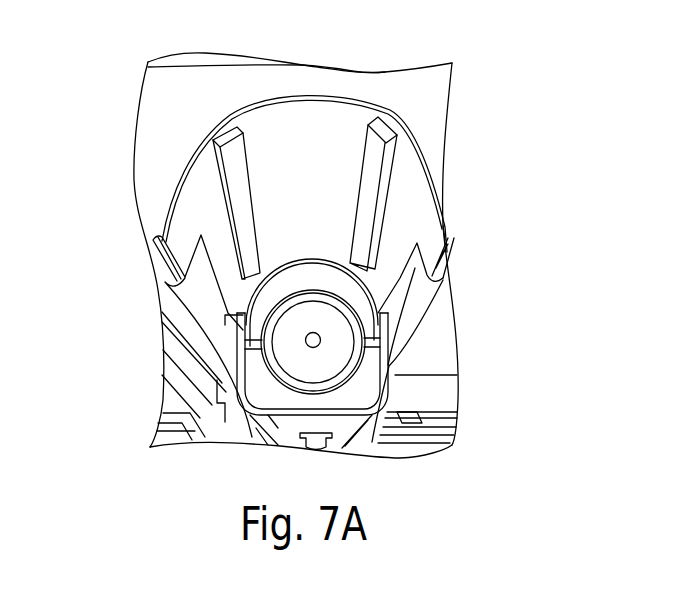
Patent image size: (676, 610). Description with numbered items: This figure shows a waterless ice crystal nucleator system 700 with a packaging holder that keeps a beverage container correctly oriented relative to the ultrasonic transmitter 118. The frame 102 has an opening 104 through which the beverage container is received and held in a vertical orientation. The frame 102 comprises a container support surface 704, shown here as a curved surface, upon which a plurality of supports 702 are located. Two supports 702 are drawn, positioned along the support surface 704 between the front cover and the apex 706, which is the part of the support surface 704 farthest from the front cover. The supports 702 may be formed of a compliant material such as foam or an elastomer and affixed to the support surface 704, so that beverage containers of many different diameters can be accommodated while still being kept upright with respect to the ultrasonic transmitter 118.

The waterless ice crystal nucleator system 700 is at (547, 106).
The frame 102 is at (150, 110).
The opening 104 is at (187, 162).
The ultrasonic transmitter 118 is at (298, 364).
The plurality of supports 702 is at (252, 150).
The container support surface 704 is at (418, 173).
The apex 706 is at (315, 103).